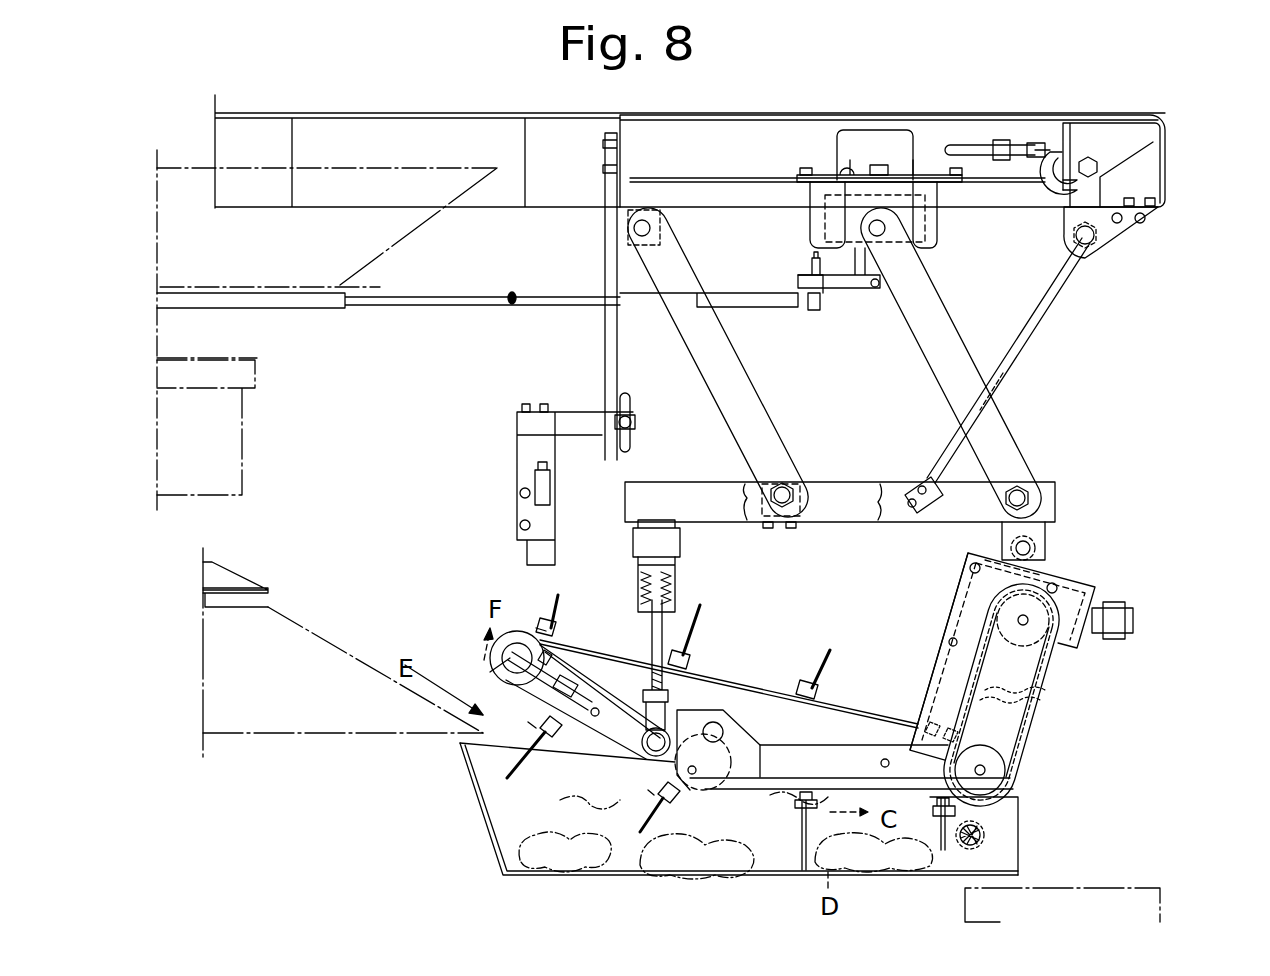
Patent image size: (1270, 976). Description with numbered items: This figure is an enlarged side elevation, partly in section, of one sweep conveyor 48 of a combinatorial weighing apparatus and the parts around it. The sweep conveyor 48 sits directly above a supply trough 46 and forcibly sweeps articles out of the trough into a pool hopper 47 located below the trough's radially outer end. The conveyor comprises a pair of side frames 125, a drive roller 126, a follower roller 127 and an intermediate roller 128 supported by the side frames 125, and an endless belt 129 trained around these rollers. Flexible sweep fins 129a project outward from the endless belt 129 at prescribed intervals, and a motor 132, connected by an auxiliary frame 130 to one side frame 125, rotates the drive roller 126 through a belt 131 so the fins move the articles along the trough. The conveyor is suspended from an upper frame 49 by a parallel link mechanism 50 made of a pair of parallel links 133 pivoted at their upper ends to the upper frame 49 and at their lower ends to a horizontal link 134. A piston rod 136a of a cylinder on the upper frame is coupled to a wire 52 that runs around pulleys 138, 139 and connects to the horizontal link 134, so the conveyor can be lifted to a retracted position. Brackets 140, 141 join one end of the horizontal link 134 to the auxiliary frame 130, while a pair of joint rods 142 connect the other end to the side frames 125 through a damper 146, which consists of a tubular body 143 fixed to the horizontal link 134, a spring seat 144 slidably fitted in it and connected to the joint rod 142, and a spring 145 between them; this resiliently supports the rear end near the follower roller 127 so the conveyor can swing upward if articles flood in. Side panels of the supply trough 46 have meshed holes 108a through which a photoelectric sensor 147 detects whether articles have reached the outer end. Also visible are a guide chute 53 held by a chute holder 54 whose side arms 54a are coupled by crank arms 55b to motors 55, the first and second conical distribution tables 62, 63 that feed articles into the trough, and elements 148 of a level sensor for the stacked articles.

The supply trough 46 is at (470, 790).
The pool hopper 47 is at (1142, 911).
The sweep conveyor 48 is at (850, 690).
The upper frame 49 is at (1165, 160).
The parallel link mechanism 50 is at (1095, 461).
The wire 52 is at (1063, 322).
The guide chute 53 is at (375, 254).
The chute holder 54 is at (291, 288).
The side arm 54a is at (725, 290).
The motor 55 is at (869, 140).
The crank arm 55b is at (858, 288).
The first conical distribution table 62 is at (332, 657).
The second conical distribution table 63 is at (227, 580).
The meshed hole 108a is at (980, 832).
The side frame 125 is at (852, 740).
The drive roller 126 is at (1025, 755).
The follower roller 127 is at (492, 672).
The intermediate roller 128 is at (692, 791).
The endless belt 129 is at (760, 690).
The sweep fin 129a is at (555, 598).
The auxiliary frame 130 is at (935, 655).
The belt 131 is at (1040, 712).
The motor 132 is at (1090, 582).
The parallel link 133 is at (940, 319).
The horizontal link 134 is at (838, 490).
The piston rod 136a is at (972, 145).
The pulley 138 is at (1062, 197).
The pulley 139 is at (1073, 250).
The bracket 140 is at (1030, 530).
The bracket 141 is at (1053, 559).
The joint rod 142 is at (650, 654).
The tubular body 143 is at (640, 576).
The spring seat 144 is at (682, 580).
The spring 145 is at (643, 600).
The damper 146 is at (640, 532).
The photoelectric sensor 147 is at (978, 845).
The photoelectric level sensor element 148 is at (517, 552).